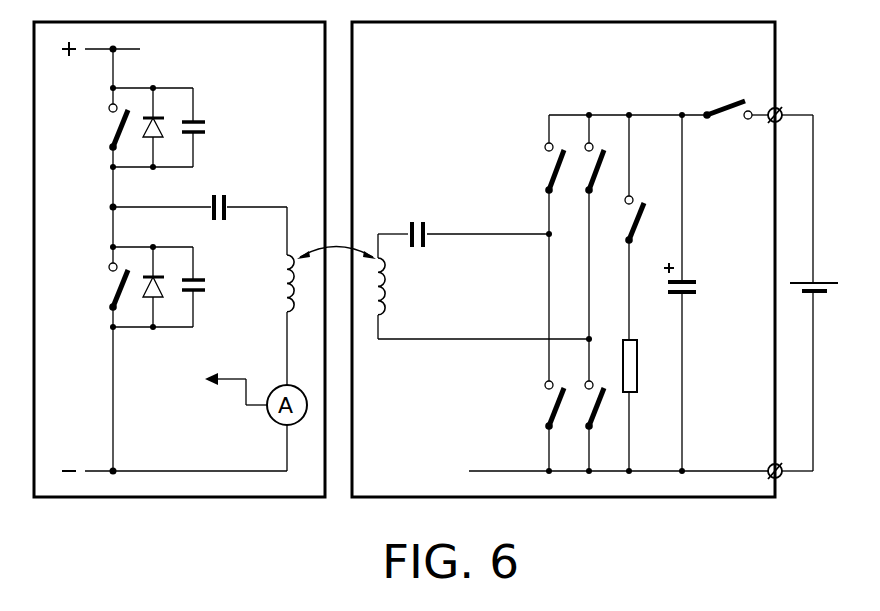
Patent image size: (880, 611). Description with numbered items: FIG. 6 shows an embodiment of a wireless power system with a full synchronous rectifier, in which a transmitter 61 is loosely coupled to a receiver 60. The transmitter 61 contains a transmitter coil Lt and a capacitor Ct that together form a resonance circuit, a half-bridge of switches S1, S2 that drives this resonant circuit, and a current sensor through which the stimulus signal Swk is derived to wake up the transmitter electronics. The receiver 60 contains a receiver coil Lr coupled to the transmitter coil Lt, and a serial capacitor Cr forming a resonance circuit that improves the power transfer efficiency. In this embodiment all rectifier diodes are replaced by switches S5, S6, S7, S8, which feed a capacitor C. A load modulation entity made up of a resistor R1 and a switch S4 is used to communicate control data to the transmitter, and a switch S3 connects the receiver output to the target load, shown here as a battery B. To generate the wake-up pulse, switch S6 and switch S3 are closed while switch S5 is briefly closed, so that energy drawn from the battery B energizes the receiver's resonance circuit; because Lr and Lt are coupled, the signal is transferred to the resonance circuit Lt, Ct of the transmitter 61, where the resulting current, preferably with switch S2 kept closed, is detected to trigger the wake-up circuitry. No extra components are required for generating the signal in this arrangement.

The transmitter 61 is at (300, 61).
The receiver 60 is at (405, 61).
The half-bridge switch S1 is at (118, 125).
The half-bridge switch S2 is at (118, 284).
The transmitter capacitor Ct is at (226, 198).
The transmitter coil Lt is at (283, 277).
The stimulus signal Swk is at (212, 386).
The serial capacitor Cr is at (414, 217).
The receiver coil Lr is at (388, 279).
The rectifier switch S5 is at (553, 165).
The rectifier switch S8 is at (599, 158).
The load modulation switch S4 is at (647, 216).
The load switch S3 is at (725, 118).
The rectifier switch S7 is at (553, 403).
The rectifier switch S6 is at (601, 394).
The load modulation resistor R1 is at (640, 372).
The capacitor C is at (698, 291).
The battery B is at (830, 281).